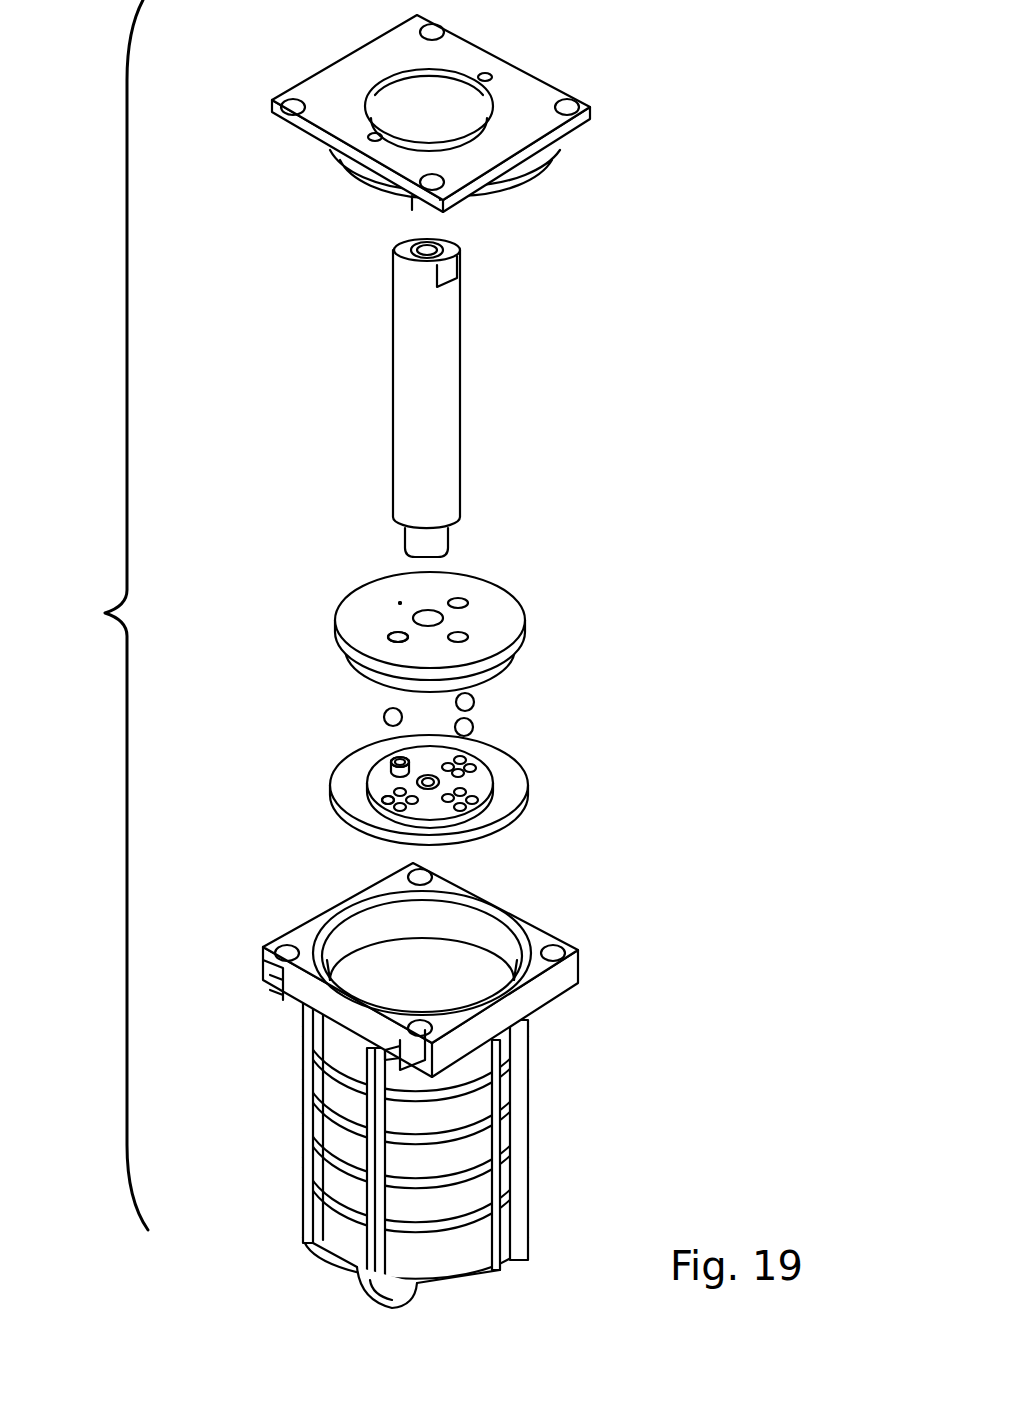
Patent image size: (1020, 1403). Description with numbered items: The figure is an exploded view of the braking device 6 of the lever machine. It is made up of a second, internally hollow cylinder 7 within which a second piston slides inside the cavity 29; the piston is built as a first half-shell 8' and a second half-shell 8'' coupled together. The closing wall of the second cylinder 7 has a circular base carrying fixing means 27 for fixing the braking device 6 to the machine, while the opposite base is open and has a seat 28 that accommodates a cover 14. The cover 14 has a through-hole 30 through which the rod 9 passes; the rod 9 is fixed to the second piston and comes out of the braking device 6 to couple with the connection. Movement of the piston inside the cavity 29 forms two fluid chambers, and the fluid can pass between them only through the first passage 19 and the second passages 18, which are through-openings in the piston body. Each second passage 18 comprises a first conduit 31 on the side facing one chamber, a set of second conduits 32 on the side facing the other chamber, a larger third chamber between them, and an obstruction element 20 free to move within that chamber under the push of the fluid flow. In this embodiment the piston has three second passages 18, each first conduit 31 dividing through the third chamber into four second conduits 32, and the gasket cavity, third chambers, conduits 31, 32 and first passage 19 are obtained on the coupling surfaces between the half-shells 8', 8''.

The braking device 6 is at (109, 615).
The second cylinder 7 is at (361, 1155).
The first half-shell 8' is at (408, 592).
The second half-shell 8'' is at (416, 701).
The rod 9 is at (427, 390).
The cover 14 is at (396, 113).
The second passage 18 is at (382, 790).
The first passage 19 is at (395, 597).
The obstruction element 20 is at (390, 700).
The fixing means 27 is at (390, 1288).
The seat 28 is at (407, 964).
The cavity 29 is at (415, 978).
The through-hole 30 is at (432, 135).
The first conduit 31 is at (467, 623).
The second conduits 32 is at (602, 843).